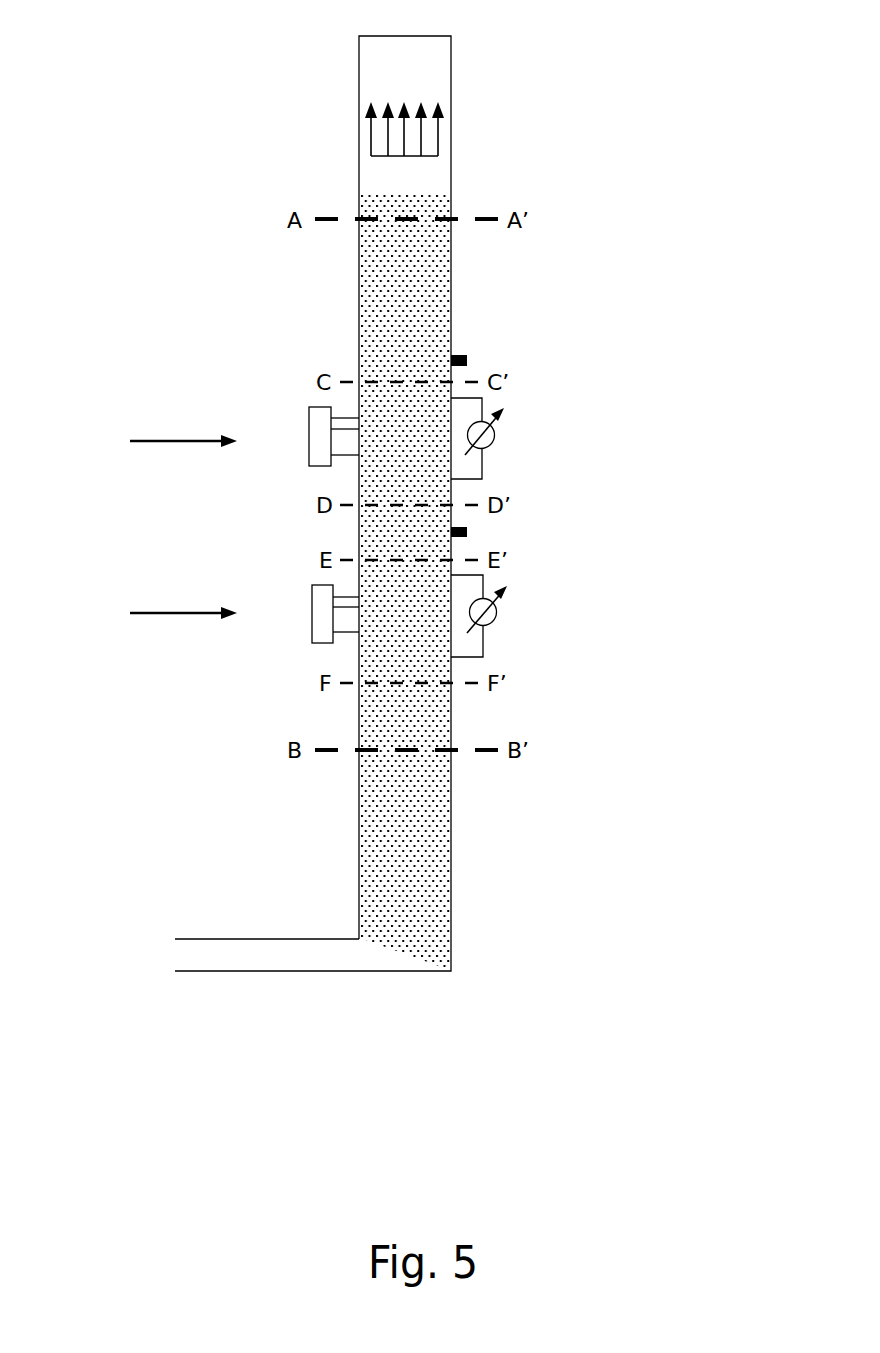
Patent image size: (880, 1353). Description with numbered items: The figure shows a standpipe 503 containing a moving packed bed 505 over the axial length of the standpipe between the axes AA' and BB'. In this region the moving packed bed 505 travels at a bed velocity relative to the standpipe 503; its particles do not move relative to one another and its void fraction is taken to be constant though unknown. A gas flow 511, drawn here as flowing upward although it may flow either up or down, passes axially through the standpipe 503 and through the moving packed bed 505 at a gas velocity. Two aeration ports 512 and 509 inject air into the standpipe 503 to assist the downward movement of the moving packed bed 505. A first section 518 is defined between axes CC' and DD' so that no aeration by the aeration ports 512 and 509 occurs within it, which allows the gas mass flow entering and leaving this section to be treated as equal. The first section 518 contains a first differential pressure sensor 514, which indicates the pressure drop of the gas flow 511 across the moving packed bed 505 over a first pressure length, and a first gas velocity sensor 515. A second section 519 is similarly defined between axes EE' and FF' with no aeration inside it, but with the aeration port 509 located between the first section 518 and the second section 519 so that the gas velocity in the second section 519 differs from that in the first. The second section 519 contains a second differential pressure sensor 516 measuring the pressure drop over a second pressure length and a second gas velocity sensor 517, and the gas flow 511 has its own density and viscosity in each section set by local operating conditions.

The standpipe 503 is at (452, 168).
The moving packed bed 505 is at (390, 315).
The gas flow 511 is at (410, 103).
The aeration port 512 is at (467, 355).
The aeration port 509 is at (467, 537).
The first differential pressure sensor 514 is at (495, 439).
The second differential pressure sensor 516 is at (498, 615).
The first gas velocity sensor 515 is at (308, 440).
The second gas velocity sensor 517 is at (313, 618).
The first section 518 is at (160, 440).
The second section 519 is at (160, 612).